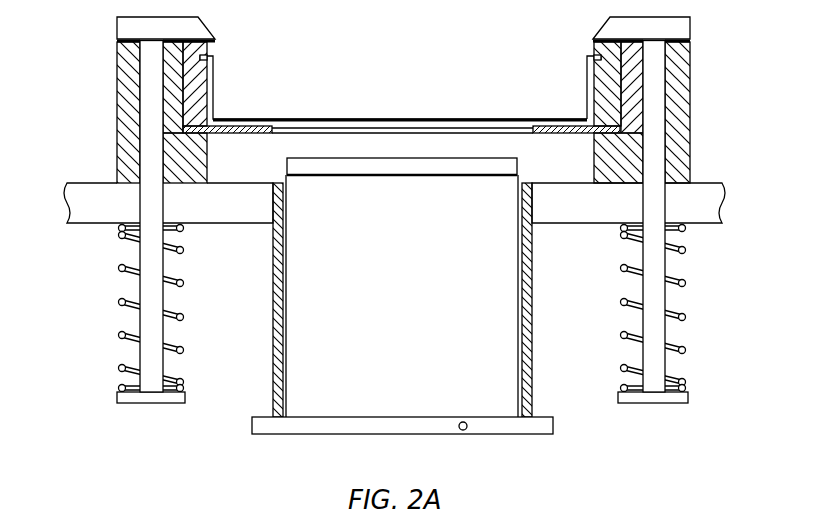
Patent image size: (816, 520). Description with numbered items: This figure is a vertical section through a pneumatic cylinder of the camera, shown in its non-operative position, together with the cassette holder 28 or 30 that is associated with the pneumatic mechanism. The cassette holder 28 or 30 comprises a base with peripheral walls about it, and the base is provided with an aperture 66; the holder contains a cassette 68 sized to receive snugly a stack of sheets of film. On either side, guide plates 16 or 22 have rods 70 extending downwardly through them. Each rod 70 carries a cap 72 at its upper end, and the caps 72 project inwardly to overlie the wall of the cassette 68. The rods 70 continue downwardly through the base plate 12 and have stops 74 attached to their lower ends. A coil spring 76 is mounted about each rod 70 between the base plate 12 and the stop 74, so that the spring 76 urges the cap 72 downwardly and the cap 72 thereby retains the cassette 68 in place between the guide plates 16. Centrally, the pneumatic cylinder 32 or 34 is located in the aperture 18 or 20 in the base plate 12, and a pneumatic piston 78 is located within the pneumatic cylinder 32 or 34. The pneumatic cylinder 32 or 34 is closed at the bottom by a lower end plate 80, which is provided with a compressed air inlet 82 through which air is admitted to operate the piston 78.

The base plate 12 is at (205, 205).
The guide plate 16 is at (394, 112).
The guide plate 22 is at (125, 127).
The aperture 18 is at (367, 170).
The aperture 20 is at (285, 183).
The cassette holder 28 is at (550, 79).
The cassette holder 30 is at (594, 53).
The pneumatic cylinder 32 is at (436, 300).
The pneumatic cylinder 34 is at (530, 351).
The aperture 66 is at (280, 133).
The cassette 68 is at (217, 88).
The rod 70 is at (152, 160).
The cap 72 is at (187, 30).
The stop 74 is at (157, 398).
The coil spring 76 is at (184, 317).
The pneumatic piston 78 is at (302, 352).
The end plate 80 is at (285, 425).
The compressed air inlet 82 is at (459, 431).